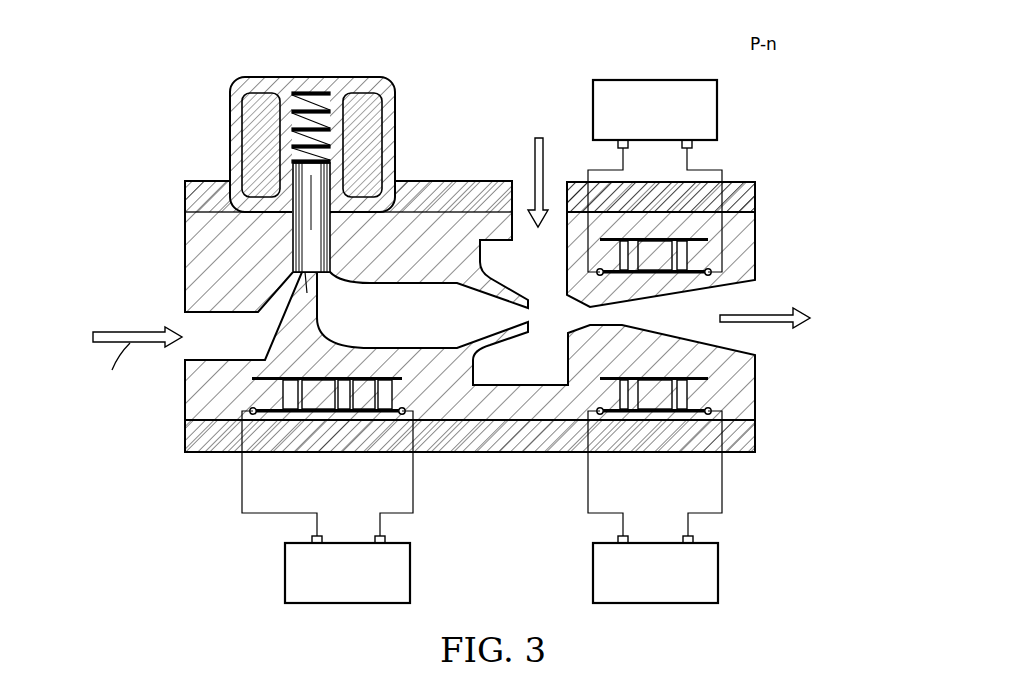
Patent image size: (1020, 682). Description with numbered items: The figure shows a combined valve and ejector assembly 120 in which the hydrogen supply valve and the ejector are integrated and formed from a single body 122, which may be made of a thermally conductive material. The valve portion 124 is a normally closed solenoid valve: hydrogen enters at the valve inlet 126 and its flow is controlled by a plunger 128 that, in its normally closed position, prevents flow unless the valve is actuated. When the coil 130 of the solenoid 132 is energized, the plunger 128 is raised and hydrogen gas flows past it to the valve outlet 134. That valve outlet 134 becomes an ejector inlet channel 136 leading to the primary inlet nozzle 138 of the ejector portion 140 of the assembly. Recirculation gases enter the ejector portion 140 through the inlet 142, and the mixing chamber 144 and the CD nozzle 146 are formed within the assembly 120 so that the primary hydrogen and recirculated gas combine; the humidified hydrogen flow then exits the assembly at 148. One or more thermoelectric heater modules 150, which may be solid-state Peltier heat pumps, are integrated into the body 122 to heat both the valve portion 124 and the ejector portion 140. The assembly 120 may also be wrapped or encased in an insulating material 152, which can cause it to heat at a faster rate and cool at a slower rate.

The combined valve and ejector assembly 120 is at (471, 312).
The single body 122 is at (442, 398).
The valve portion 124 is at (172, 219).
The valve inlet 126 is at (197, 337).
The plunger 128 is at (313, 187).
The coil 130 is at (373, 113).
The solenoid 132 is at (353, 82).
The valve outlet 134 is at (392, 328).
The ejector inlet channel 136 is at (462, 328).
The primary inlet nozzle 138 is at (503, 345).
The ejector portion 140 is at (779, 464).
The inlet 142 is at (535, 176).
The mixing chamber 144 is at (556, 366).
The CD nozzle 146 is at (613, 307).
The assembly exit 148 is at (758, 305).
The thermoelectric heater module 150 is at (310, 413).
The insulating material 152 is at (757, 433).